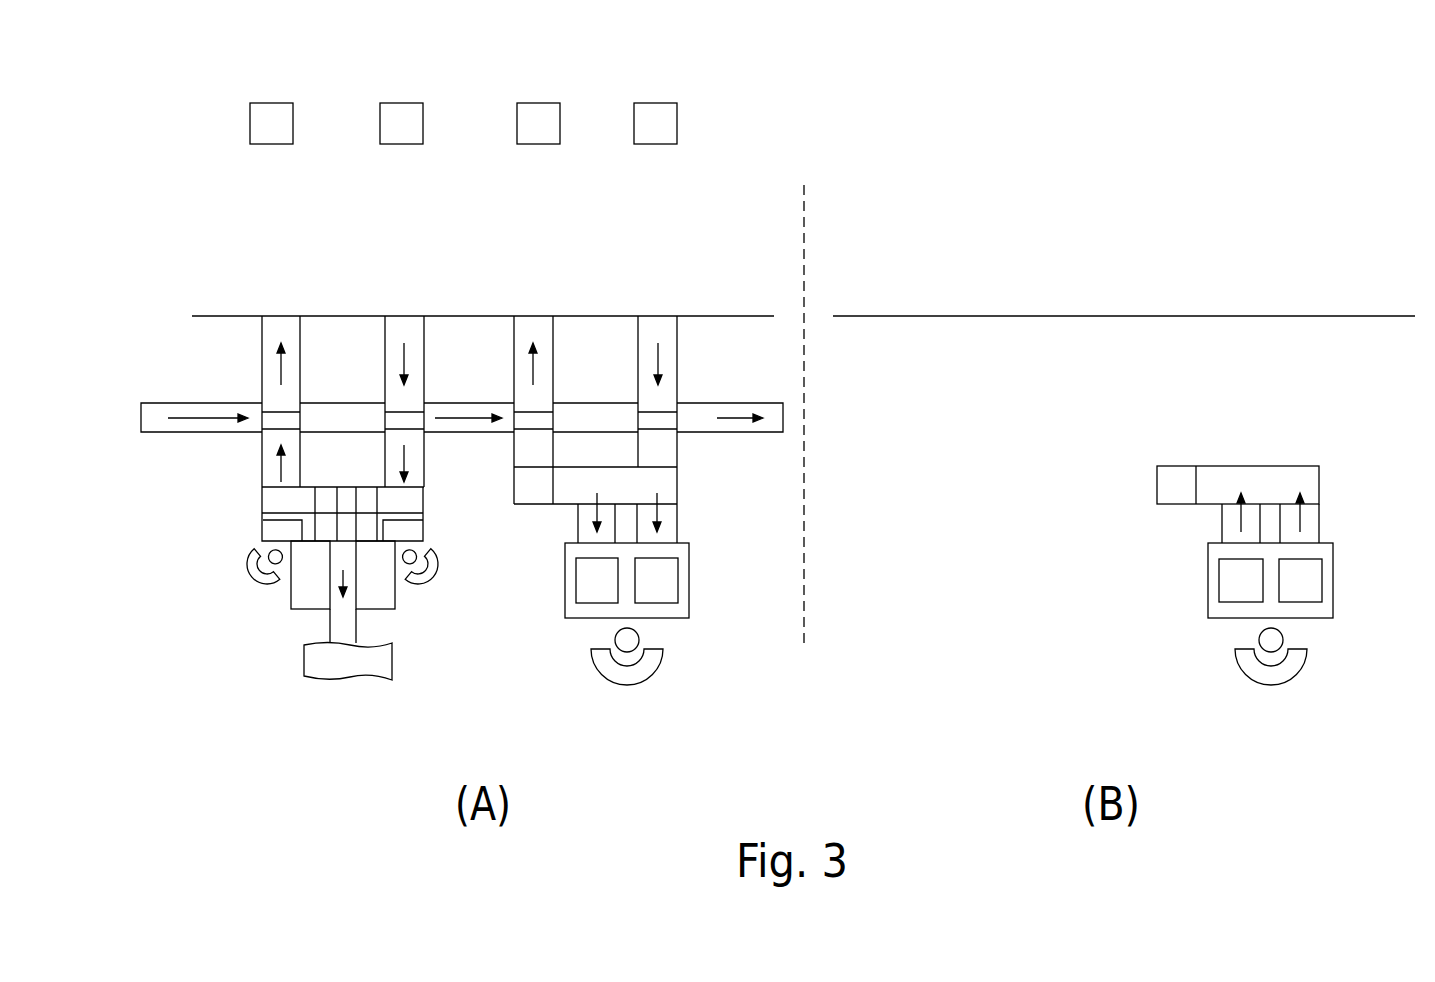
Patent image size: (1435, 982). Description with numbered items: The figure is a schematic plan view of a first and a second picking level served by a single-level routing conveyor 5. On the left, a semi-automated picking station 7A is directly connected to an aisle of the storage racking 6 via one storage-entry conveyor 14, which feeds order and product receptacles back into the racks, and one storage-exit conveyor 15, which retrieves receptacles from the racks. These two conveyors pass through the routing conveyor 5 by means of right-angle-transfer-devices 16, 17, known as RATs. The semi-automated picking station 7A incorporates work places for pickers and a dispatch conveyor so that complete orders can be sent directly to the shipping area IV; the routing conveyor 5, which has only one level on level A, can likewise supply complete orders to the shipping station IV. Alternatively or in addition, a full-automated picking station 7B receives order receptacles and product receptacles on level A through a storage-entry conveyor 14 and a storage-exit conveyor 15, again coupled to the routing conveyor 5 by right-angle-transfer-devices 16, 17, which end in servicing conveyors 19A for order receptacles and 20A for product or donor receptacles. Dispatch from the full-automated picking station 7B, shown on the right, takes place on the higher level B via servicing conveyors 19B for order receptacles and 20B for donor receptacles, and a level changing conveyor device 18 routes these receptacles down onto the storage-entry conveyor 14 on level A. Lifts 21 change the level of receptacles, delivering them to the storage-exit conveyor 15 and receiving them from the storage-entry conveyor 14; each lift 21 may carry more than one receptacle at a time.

The routing conveyor 5 is at (155, 415).
The storage racking 6 is at (447, 208).
The semi-automated picking station 7A is at (418, 597).
The full-automated picking station 7B is at (689, 628).
The storage-entry conveyor 14 is at (292, 333).
The storage-exit conveyor 15 is at (404, 327).
The right-angle-transfer-device 16 is at (270, 423).
The right-angle-transfer-device 17 is at (392, 420).
The level changing conveyor device 18 is at (533, 487).
The servicing conveyor for order receptacles 19A is at (610, 515).
The servicing conveyor for order receptacles 19B is at (1253, 522).
The servicing conveyor for product receptacles 20A is at (665, 537).
The servicing conveyor for product receptacles 20B is at (1307, 537).
The lift 21 is at (276, 128).
The shipping area IV is at (347, 660).